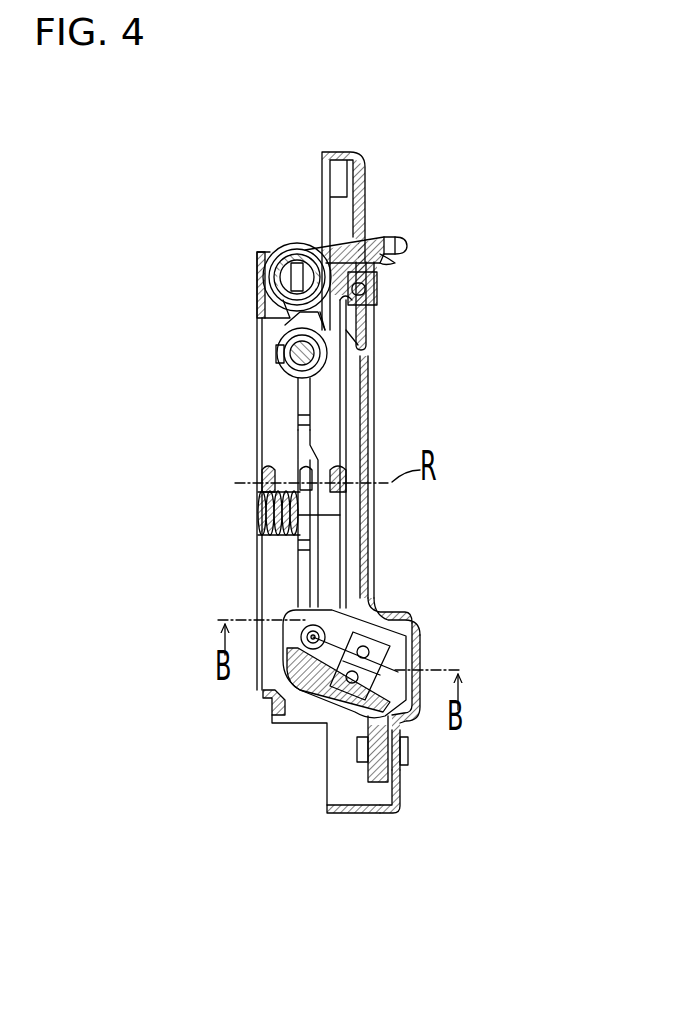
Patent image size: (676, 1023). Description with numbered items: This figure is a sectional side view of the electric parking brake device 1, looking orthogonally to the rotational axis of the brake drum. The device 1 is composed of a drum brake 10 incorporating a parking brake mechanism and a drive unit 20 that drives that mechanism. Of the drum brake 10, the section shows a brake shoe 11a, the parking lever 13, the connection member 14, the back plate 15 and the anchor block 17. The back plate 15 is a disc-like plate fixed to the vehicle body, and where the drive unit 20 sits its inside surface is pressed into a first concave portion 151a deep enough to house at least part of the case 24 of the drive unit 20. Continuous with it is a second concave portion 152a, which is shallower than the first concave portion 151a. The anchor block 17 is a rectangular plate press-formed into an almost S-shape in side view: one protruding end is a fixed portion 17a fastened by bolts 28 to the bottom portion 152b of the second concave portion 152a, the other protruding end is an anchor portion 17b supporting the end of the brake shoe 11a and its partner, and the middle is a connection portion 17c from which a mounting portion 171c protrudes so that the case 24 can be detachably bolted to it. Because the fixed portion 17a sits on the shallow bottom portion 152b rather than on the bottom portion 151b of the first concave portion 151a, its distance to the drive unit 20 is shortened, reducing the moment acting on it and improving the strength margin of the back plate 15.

The electric parking brake device 1 is at (428, 128).
The drum brake 10 is at (331, 152).
The connection member 14 is at (283, 343).
The brake shoe 11a is at (298, 412).
The parking lever 13 is at (305, 445).
The back plate 15 is at (376, 372).
The drive unit 20 is at (277, 595).
The case 24 is at (297, 622).
The bottom portion of the first concave portion 151b is at (402, 622).
The first concave portion 151a is at (420, 650).
The mounting portion 171c is at (410, 725).
The bolts 28 is at (408, 760).
The second concave portion 152a is at (398, 780).
The bottom portion of the second concave portion 152b is at (388, 811).
The anchor block 17 is at (207, 715).
The fixed portion 17a is at (367, 757).
The anchor portion 17b is at (266, 688).
The connection portion 17c is at (318, 683).